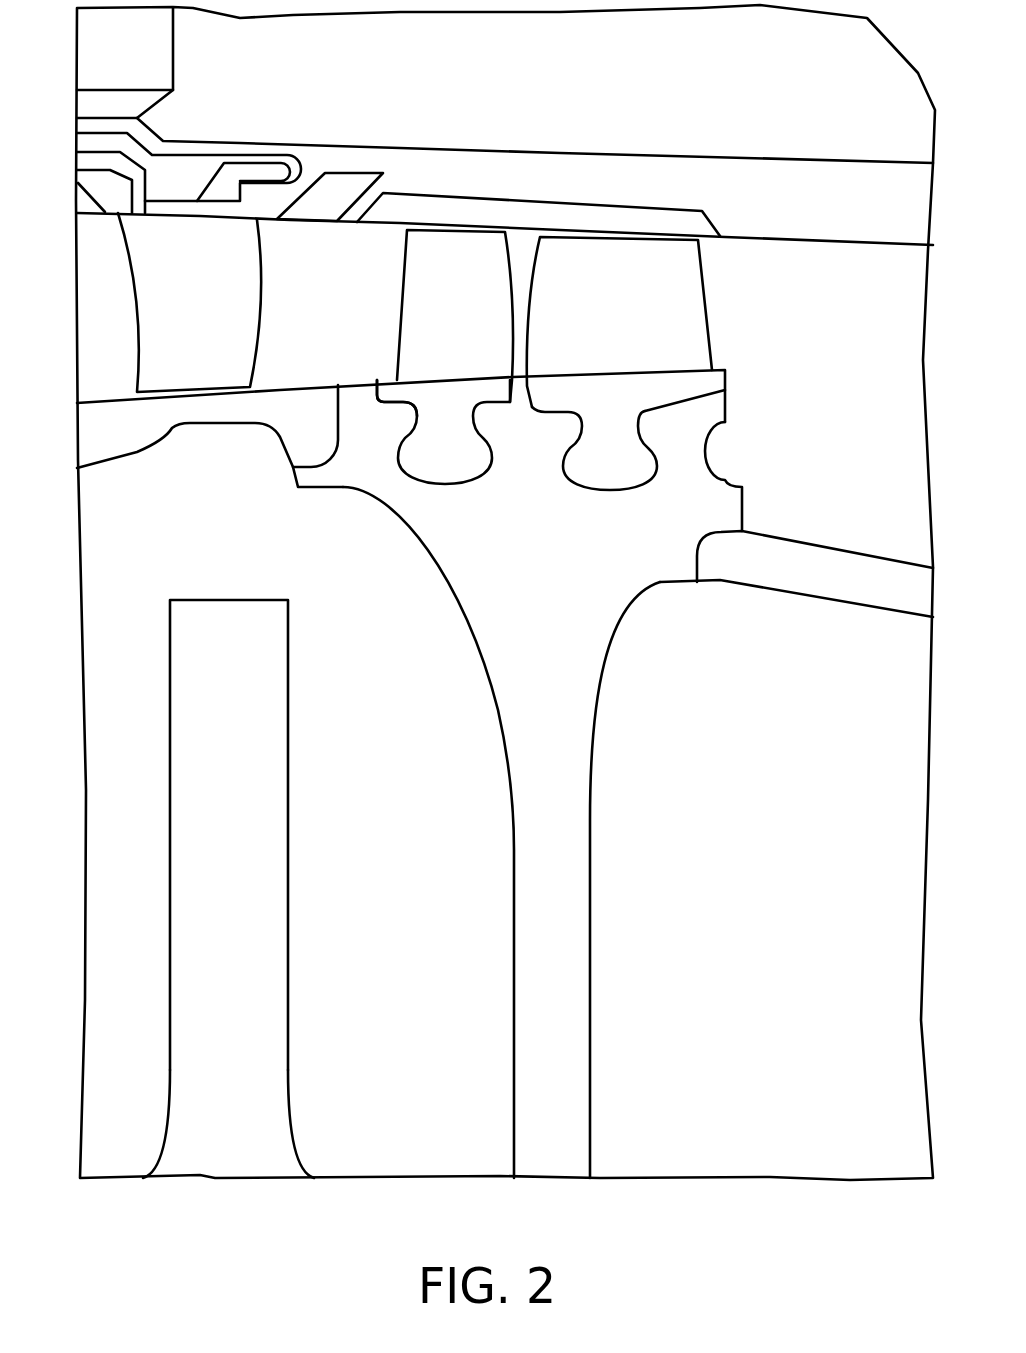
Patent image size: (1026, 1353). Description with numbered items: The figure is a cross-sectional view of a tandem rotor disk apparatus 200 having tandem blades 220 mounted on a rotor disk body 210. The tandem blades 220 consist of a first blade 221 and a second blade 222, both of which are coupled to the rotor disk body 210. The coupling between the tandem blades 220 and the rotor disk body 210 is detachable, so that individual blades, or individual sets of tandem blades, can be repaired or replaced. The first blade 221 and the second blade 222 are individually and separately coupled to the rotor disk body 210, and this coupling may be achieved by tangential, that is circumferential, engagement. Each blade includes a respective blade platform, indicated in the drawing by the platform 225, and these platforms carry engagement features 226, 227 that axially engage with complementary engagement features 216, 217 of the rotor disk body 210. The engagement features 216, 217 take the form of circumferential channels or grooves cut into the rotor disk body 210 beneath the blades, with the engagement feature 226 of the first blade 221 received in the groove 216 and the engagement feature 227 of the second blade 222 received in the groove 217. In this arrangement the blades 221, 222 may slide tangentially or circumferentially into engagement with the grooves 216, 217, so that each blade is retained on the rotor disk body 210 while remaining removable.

The tandem rotor disk apparatus 200 is at (748, 1004).
The rotor disk body 210 is at (571, 771).
The engagement feature of the rotor disk body 216 is at (448, 478).
The engagement feature of the rotor disk body 217 is at (633, 450).
The tandem blades 220 is at (514, 223).
The first blade 221 is at (468, 321).
The second blade 222 is at (631, 321).
The platform 225 is at (570, 393).
The engagement feature of the blade platform 226 is at (437, 450).
The engagement feature of the blade platform 227 is at (662, 457).